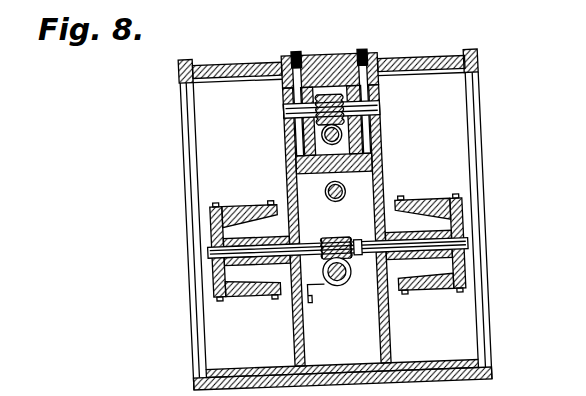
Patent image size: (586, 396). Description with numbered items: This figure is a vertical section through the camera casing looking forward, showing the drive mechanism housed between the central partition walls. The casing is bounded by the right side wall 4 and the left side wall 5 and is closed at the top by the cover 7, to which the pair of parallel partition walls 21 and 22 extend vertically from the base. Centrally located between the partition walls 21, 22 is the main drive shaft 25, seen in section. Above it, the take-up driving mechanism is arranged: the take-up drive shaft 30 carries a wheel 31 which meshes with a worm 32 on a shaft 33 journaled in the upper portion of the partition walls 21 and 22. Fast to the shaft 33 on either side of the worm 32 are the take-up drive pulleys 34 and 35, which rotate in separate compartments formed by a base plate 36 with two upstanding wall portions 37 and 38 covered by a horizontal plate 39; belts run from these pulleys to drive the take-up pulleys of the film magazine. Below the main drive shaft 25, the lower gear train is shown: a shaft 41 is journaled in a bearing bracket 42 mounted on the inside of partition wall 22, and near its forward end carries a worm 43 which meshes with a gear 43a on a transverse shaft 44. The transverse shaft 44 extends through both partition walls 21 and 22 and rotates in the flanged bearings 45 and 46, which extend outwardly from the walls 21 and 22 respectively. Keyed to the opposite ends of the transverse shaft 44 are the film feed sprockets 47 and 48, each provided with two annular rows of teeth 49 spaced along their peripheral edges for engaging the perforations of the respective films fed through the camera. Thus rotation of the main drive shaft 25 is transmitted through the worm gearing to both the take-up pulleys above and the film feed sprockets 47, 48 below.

The right side wall 4 is at (492, 361).
The left side wall 5 is at (194, 322).
The cover 7 is at (350, 60).
The partition wall 21 is at (392, 358).
The partition wall 22 is at (296, 356).
The main drive shaft 25 is at (354, 199).
The take-up drive shaft 30 is at (382, 126).
The wheel 31 is at (335, 134).
The worm 32 is at (392, 114).
The shaft 33 is at (296, 115).
The take-up drive pulley 34 is at (374, 150).
The take-up drive pulley 35 is at (307, 146).
The base plate 36 is at (385, 174).
The upstanding wall portion 37 is at (381, 88).
The upstanding wall portion 38 is at (307, 97).
The horizontal plate 39 is at (383, 58).
The shaft 41 is at (343, 291).
The bearing bracket 42 is at (310, 307).
The worm 43 is at (334, 292).
The gear 43a is at (333, 242).
The transverse shaft 44 is at (366, 261).
The flanged bearing 45 is at (405, 267).
The flanged bearing 46 is at (284, 267).
The film feed sprocket 47 is at (441, 298).
The film feed sprocket 48 is at (256, 298).
The rows of teeth 49 is at (224, 302).